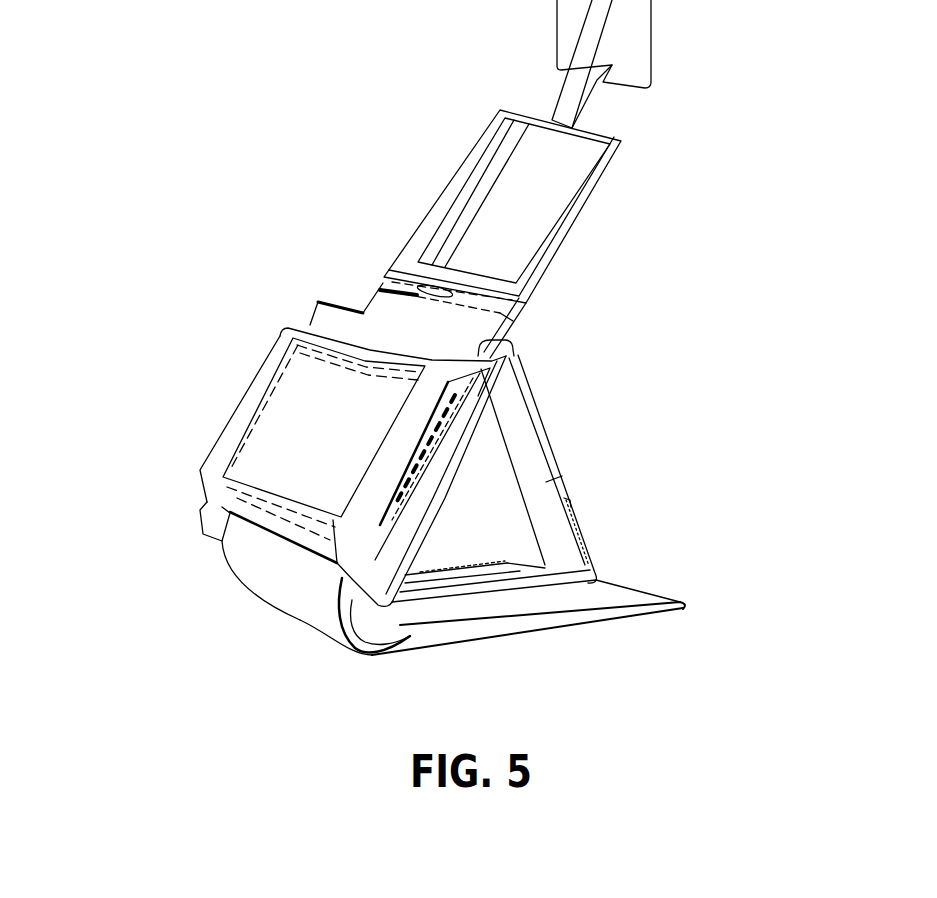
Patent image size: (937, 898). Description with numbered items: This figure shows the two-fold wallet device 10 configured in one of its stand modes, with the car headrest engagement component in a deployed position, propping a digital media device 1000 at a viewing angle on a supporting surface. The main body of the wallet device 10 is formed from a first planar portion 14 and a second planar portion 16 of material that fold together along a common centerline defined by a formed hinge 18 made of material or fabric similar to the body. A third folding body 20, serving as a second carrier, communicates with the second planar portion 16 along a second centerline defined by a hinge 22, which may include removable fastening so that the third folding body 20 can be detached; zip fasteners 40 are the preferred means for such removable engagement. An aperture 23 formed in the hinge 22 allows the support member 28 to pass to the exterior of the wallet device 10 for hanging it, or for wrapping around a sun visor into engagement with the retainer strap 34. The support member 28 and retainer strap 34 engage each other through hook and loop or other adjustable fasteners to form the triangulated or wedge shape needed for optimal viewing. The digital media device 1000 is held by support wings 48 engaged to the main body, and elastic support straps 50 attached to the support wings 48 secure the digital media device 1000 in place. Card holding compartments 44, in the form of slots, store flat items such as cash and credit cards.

The wallet device 10 is at (176, 186).
The first planar portion 14 is at (573, 627).
The second planar portion 16 is at (270, 538).
The hinge 18 is at (292, 607).
The third folding body 20 is at (582, 218).
The hinge 22 is at (398, 285).
The aperture 23 is at (437, 288).
The support member 28 is at (547, 480).
The retainer strap 34 is at (585, 535).
The zip fastener 40 is at (500, 297).
The card holding compartment 44 is at (477, 182).
The support wing 48 is at (516, 355).
The elastic support strap 50 is at (232, 410).
The digital media device 1000 is at (355, 460).